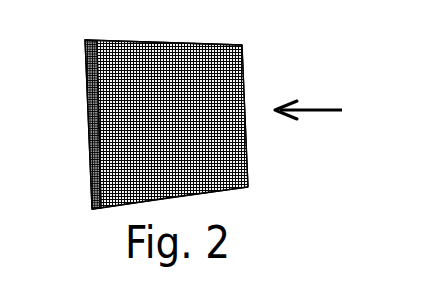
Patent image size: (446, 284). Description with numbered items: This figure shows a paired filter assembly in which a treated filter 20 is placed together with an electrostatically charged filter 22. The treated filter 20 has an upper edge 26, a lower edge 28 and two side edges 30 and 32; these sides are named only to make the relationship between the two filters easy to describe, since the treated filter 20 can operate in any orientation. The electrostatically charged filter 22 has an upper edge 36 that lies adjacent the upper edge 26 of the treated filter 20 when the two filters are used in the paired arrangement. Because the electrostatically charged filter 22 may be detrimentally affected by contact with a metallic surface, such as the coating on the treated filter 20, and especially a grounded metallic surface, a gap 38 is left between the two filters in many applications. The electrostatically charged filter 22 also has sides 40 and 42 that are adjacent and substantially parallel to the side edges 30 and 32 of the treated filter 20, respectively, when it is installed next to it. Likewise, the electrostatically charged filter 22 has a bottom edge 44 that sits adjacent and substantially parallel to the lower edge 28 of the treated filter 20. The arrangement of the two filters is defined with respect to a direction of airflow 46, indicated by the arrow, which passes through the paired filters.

The treated filter 20 is at (85, 69).
The electrostatically charged filter 22 is at (244, 57).
The upper edge 26 is at (88, 40).
The lower edge 28 is at (100, 210).
The side edge 30 is at (244, 90).
The side edge 32 is at (85, 100).
The upper edge 36 is at (205, 44).
The gap 38 is at (151, 202).
The side 40 is at (248, 160).
The side 42 is at (100, 159).
The bottom edge 44 is at (233, 189).
The direction of airflow 46 is at (301, 111).